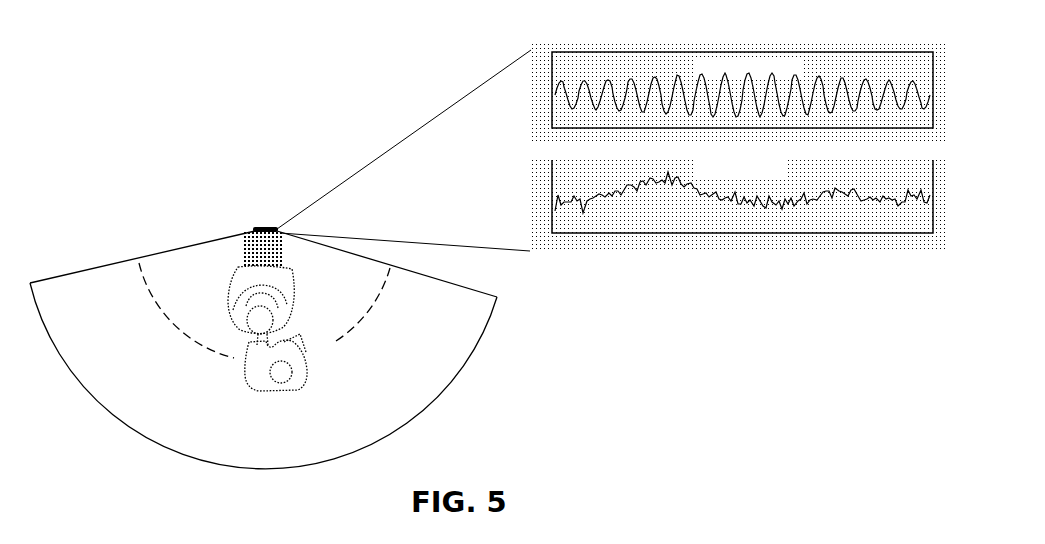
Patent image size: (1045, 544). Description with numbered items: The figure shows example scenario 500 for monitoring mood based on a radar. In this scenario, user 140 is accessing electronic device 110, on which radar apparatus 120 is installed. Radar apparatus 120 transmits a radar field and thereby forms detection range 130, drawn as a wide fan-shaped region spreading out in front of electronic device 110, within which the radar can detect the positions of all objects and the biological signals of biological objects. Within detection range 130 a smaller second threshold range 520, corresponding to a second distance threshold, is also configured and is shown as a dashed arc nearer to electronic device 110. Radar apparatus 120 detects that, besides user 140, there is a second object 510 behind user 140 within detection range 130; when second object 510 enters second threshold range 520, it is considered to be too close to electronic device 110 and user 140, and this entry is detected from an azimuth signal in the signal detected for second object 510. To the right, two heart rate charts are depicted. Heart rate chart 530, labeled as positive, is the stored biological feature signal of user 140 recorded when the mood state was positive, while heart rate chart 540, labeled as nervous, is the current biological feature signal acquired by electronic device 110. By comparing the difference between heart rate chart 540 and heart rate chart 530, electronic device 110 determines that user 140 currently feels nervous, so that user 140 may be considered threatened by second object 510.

The example scenario 500 is at (217, 63).
The electronic device 110 is at (248, 229).
The radar apparatus 120 is at (268, 226).
The detection range 130 is at (456, 279).
The user 140 is at (243, 278).
The second object 510 is at (298, 391).
The second threshold range 520 is at (133, 264).
The heart rate chart 530 is at (592, 44).
The heart rate chart 540 is at (693, 253).